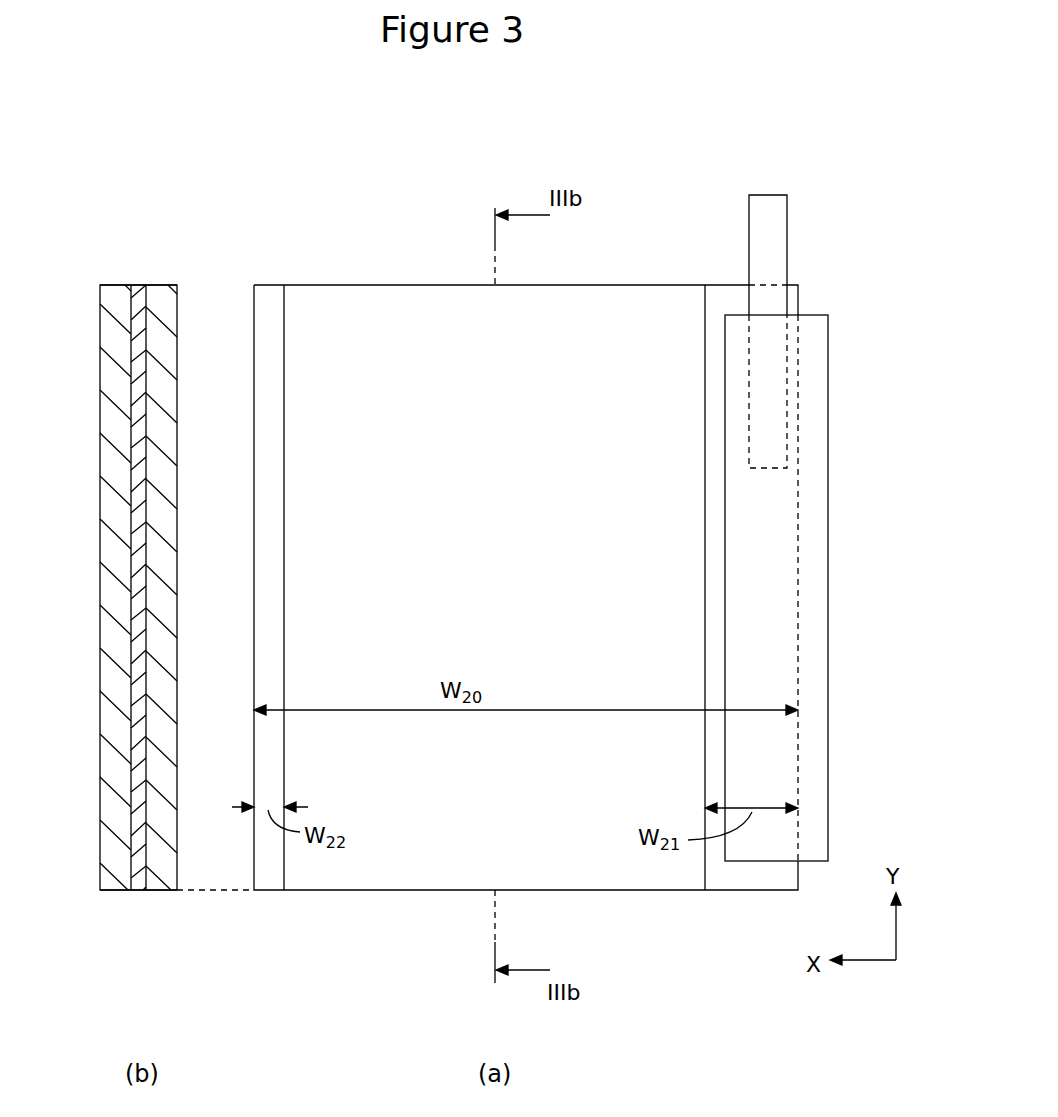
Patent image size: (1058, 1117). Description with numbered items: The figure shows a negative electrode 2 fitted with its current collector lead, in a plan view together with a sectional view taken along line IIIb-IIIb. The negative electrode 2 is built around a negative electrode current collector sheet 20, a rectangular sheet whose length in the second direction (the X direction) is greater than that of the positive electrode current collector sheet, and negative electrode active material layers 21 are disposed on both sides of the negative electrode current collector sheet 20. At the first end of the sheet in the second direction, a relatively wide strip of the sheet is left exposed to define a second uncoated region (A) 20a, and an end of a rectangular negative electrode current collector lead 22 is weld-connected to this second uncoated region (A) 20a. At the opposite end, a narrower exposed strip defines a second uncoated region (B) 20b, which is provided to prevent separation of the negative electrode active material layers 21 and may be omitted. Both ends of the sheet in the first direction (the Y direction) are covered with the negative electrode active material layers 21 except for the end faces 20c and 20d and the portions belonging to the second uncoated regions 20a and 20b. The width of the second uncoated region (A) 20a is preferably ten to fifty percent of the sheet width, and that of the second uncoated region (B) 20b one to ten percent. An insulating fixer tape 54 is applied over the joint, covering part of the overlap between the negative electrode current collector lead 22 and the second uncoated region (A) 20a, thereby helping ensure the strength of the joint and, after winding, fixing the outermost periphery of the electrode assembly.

The negative electrode 2 is at (378, 169).
The negative electrode current collector sheet 20 is at (137, 733).
The second uncoated region (A) 20a is at (738, 876).
The second uncoated region (B) 20b is at (270, 876).
The end face 20c is at (141, 285).
The end face 20d is at (138, 890).
The negative electrode active material layer 21 is at (115, 880).
The negative electrode current collector lead 22 is at (768, 238).
The insulating fixer tape 54 is at (813, 436).